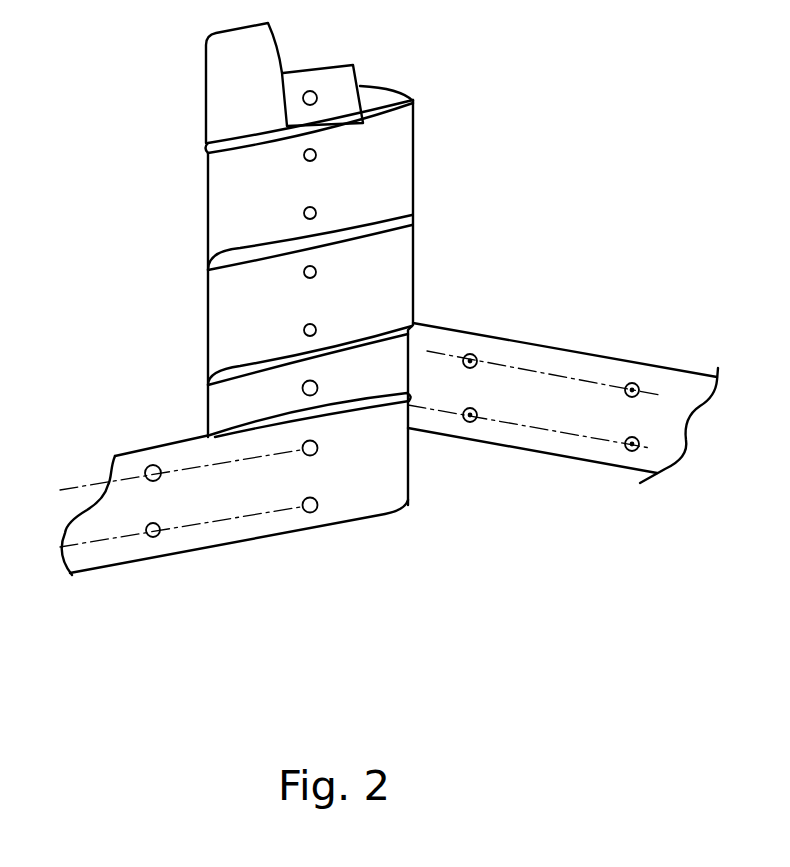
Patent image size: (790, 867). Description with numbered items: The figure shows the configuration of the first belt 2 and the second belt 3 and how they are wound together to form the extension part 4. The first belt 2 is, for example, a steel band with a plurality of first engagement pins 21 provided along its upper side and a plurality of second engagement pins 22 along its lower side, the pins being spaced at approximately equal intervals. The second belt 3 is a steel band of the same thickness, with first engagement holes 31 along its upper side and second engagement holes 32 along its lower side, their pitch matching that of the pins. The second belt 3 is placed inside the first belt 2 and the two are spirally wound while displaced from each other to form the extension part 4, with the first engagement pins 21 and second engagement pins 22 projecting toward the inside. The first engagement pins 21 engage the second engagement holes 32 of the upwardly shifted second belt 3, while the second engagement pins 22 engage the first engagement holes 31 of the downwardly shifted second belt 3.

The first belt 2 is at (593, 356).
The second belt 3 is at (195, 551).
The extension part 4 is at (148, 76).
The first engagement pins 21 is at (317, 155).
The second engagement pins 22 is at (317, 213).
The first engagement holes 31 is at (145, 474).
The second engagement holes 32 is at (302, 388).